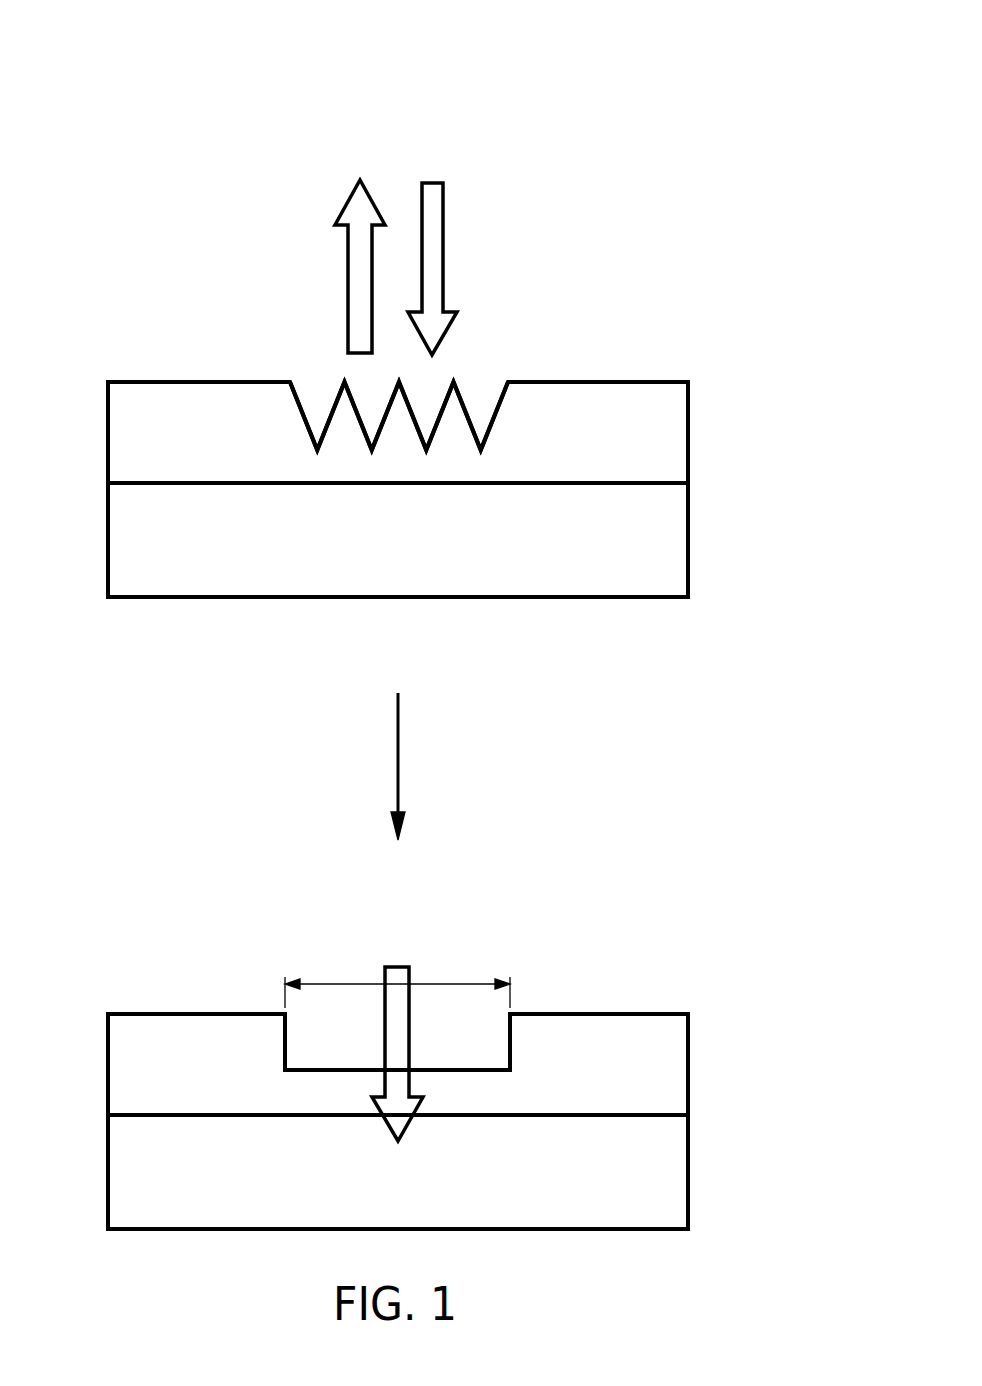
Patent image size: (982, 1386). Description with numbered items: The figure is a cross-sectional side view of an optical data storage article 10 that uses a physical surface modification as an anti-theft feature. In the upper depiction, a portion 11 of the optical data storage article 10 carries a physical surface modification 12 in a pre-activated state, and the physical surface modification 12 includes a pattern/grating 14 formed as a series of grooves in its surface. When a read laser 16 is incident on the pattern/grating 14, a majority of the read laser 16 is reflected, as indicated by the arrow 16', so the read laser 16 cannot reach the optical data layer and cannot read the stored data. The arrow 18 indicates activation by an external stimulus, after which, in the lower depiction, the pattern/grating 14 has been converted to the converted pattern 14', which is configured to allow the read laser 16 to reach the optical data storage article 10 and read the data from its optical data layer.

The optical data storage article 10 is at (700, 70).
The portion 11 is at (689, 542).
The physical surface modification 12 is at (700, 432).
The pattern/grating 14 is at (430, 374).
The converted pattern 14' is at (404, 999).
The read laser 16 is at (443, 662).
The reflected laser arrow 16' is at (334, 266).
The activation arrow 18 is at (400, 758).